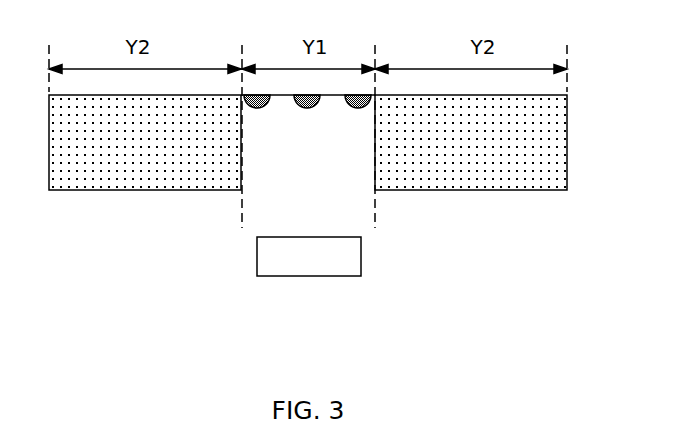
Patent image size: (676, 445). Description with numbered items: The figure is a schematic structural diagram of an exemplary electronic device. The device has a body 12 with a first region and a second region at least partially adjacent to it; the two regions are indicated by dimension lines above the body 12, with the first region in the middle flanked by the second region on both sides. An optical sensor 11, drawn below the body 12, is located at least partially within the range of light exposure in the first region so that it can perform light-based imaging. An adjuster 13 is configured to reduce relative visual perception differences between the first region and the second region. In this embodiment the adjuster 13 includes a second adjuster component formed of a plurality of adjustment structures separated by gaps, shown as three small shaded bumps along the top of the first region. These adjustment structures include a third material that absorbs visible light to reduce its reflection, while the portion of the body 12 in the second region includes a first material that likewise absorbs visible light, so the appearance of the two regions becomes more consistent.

The optical sensor 11 is at (372, 287).
The body 12 is at (505, 173).
The adjuster 13 is at (285, 116).